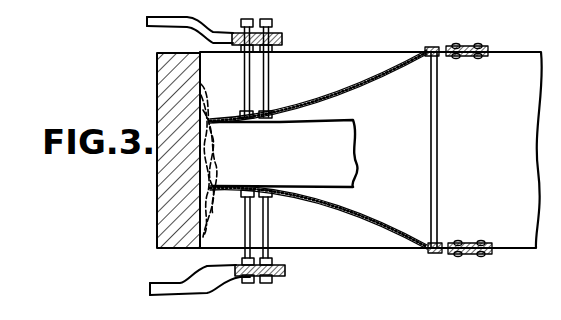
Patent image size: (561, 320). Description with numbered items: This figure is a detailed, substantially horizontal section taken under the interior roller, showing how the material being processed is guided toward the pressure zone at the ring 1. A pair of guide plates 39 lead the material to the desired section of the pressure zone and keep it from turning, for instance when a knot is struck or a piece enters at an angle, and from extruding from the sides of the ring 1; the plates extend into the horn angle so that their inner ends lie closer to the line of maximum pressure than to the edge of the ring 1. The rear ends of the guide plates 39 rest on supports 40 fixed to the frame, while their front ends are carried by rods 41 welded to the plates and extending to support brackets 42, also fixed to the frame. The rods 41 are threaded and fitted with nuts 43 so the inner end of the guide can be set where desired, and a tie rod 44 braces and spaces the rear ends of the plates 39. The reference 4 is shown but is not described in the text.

The ring 1 is at (164, 206).
The burner assembly 4 is at (105, 5).
The guide plates 39 is at (374, 86).
The supports 40 is at (471, 45).
The rods 41 is at (246, 86).
The support brackets 42 is at (165, 21).
The nuts 43 is at (253, 22).
The tie rod 44 is at (434, 134).